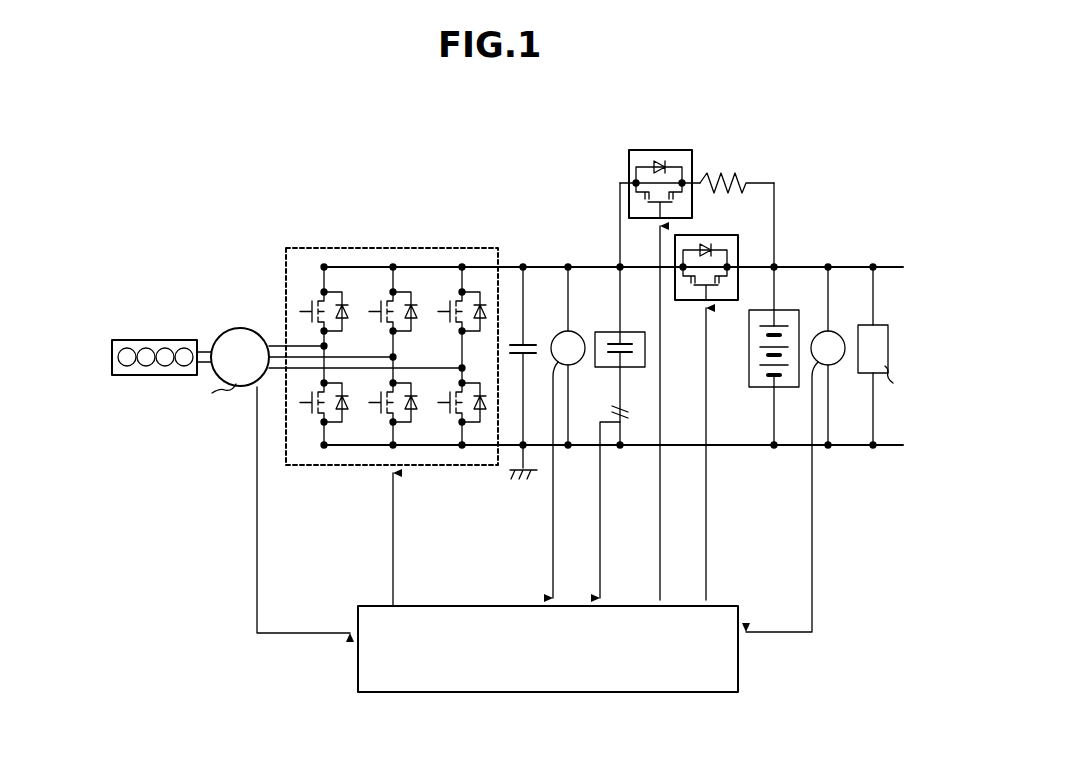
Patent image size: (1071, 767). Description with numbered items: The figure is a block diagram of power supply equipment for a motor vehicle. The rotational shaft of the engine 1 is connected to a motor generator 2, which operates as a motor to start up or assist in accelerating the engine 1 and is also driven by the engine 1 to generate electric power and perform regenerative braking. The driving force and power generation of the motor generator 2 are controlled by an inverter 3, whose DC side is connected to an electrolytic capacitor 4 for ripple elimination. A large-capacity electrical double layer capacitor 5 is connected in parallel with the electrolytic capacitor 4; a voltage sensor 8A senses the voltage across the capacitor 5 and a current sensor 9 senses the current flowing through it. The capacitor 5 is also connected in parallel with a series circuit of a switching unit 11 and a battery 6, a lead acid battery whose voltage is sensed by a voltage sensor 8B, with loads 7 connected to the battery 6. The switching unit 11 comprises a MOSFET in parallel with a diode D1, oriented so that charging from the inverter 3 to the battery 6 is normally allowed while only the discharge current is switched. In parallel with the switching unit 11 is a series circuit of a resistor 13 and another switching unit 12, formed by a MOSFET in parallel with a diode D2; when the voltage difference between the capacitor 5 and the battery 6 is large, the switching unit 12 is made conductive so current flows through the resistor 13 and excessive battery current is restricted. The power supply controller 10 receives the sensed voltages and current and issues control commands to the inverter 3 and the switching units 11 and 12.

The engine 1 is at (160, 340).
The motor generator 2 is at (245, 332).
The inverter 3 is at (395, 248).
The electrolytic capacitor 4 is at (525, 345).
The capacitor 5 is at (634, 332).
The battery 6 is at (793, 311).
The loads 7 is at (887, 326).
The voltage sensor 8A is at (577, 336).
The voltage sensor 8B is at (834, 334).
The current sensor 9 is at (624, 411).
The power supply controller 10 is at (716, 606).
The switching unit 11 is at (724, 397).
The switching unit 12 is at (674, 355).
The resistor 13 is at (738, 178).
The diode D1 is at (707, 248).
The diode D2 is at (660, 164).